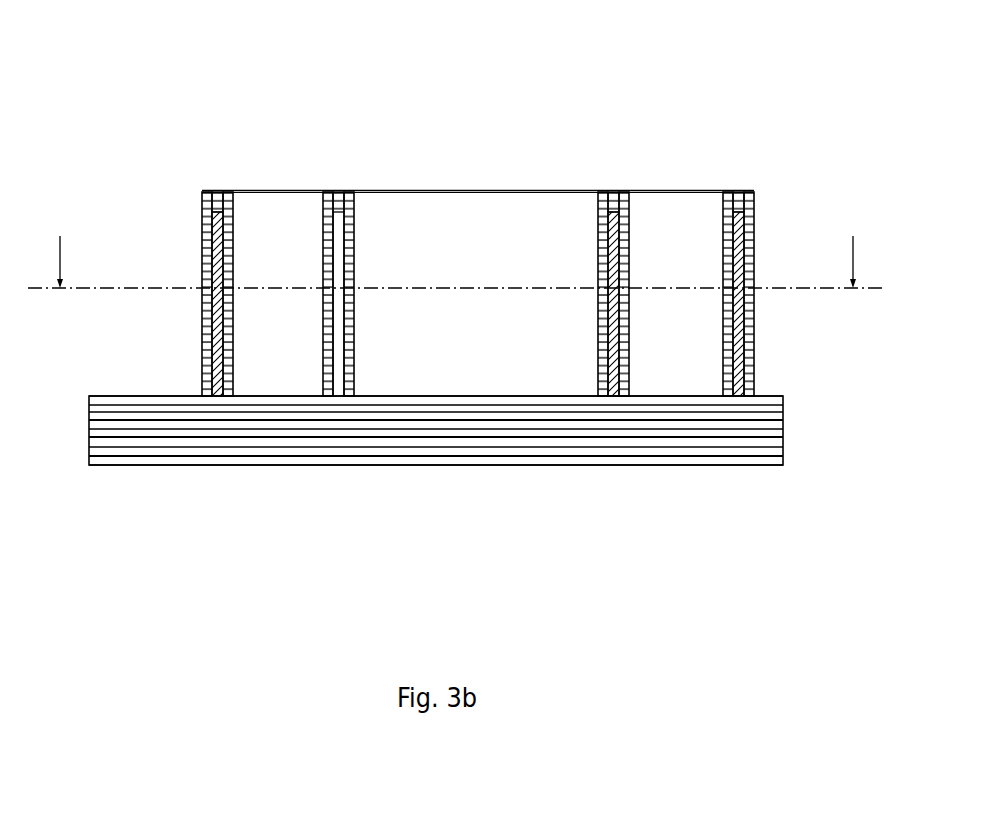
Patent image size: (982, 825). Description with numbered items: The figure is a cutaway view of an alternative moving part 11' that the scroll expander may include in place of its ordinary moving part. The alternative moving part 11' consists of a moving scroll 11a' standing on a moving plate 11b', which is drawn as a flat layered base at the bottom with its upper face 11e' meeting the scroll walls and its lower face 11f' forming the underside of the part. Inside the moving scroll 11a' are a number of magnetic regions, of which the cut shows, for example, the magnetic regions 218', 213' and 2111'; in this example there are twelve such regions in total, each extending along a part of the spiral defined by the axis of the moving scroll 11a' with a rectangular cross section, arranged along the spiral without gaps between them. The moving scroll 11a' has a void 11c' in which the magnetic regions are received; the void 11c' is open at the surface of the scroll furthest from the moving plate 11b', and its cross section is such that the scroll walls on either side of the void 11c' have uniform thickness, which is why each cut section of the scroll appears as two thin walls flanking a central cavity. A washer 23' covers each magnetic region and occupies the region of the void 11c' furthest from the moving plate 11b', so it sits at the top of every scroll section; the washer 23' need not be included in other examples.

The alternative moving part 11' is at (455, 293).
The washer 23' is at (469, 170).
The magnetic region 218' is at (175, 294).
The magnetic region 213' is at (648, 294).
The magnetic region 2111' is at (792, 294).
The void 11c' is at (384, 294).
The upper surface of base 11e' is at (436, 352).
The moving scroll 11a' is at (802, 294).
The moving plate 11b' is at (475, 432).
The lower surface of base 11f' is at (436, 510).